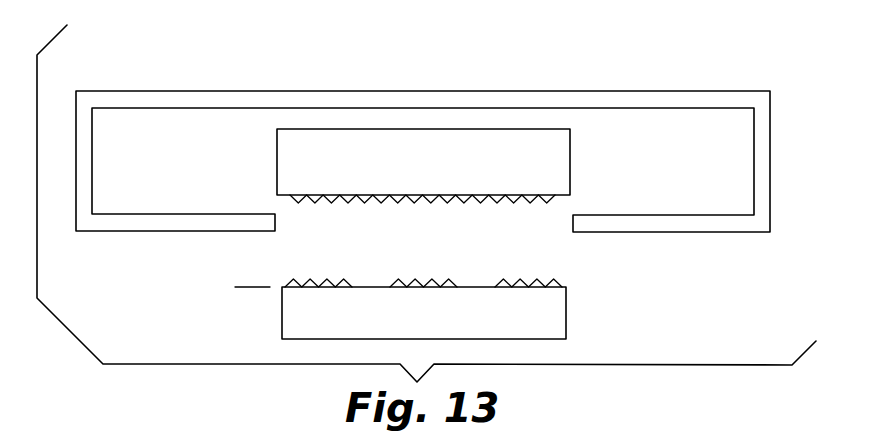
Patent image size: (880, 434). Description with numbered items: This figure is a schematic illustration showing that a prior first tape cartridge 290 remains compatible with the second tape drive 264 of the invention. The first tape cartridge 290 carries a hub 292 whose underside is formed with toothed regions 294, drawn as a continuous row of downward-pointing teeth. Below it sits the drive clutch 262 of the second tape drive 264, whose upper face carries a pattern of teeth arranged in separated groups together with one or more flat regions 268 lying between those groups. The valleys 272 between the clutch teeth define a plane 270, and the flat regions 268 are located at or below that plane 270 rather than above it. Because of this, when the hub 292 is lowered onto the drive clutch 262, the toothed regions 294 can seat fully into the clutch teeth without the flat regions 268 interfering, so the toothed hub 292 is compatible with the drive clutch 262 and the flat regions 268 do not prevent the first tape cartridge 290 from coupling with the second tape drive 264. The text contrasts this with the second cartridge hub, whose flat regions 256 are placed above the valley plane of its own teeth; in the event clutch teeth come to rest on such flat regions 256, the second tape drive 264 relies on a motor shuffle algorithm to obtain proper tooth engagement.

The second tape drive 264 is at (618, 52).
The first tape cartridge 290 is at (359, 98).
The hub 292 is at (565, 140).
The toothed regions 294 is at (553, 201).
The flat regions 256 is at (373, 195).
The drive clutch 262 is at (557, 315).
The flat regions 268 is at (370, 286).
The valleys 272 is at (554, 279).
The plane 270 is at (252, 288).